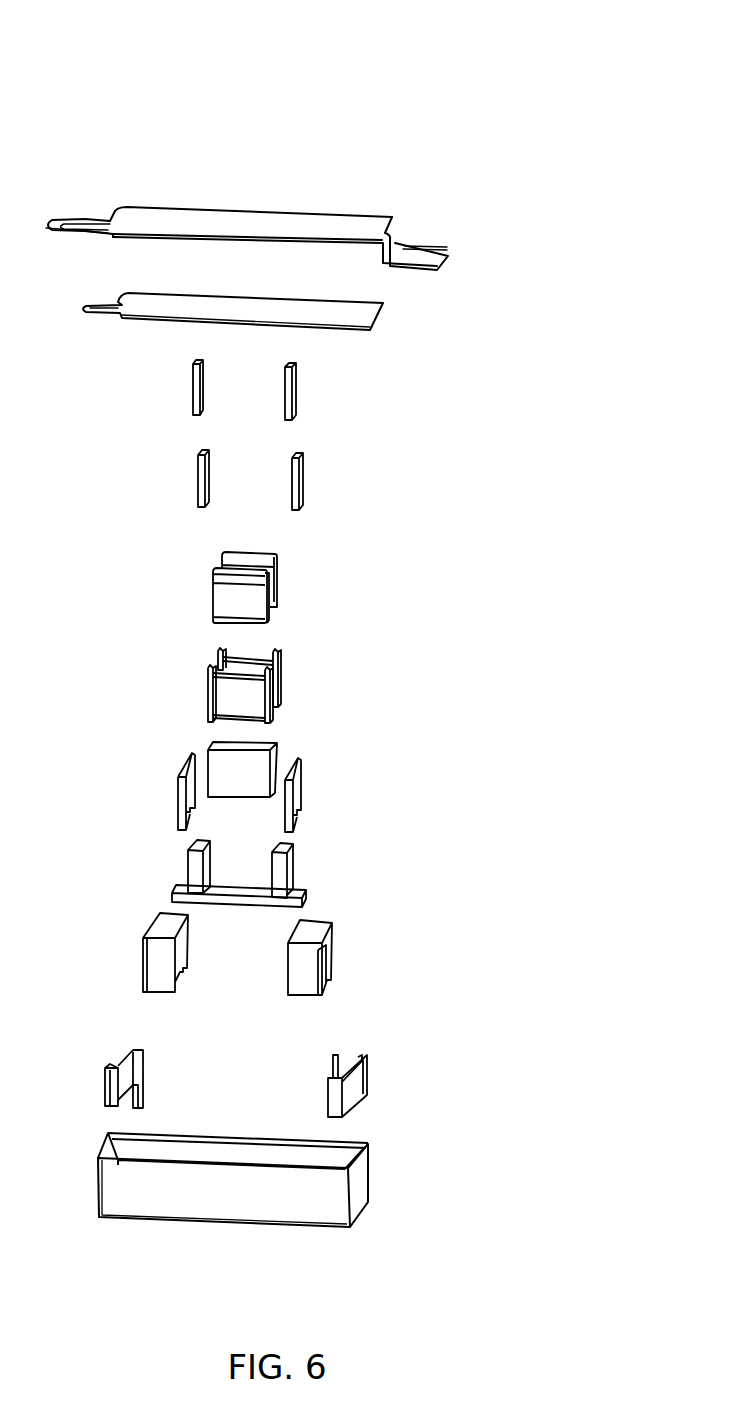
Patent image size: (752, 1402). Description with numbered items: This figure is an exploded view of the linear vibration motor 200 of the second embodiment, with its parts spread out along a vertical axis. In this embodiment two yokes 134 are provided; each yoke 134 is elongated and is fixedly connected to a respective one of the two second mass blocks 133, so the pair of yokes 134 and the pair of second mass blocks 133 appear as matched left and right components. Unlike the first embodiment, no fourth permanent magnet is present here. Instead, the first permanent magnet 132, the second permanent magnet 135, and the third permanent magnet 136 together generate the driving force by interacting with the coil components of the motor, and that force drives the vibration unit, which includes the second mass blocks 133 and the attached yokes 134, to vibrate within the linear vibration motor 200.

The linear vibration motor 200 is at (317, 41).
The first permanent magnet 132 is at (262, 768).
The second mass block 133 is at (320, 932).
The yoke 134 is at (297, 793).
The second permanent magnet 135 is at (296, 486).
The third permanent magnet 136 is at (289, 398).